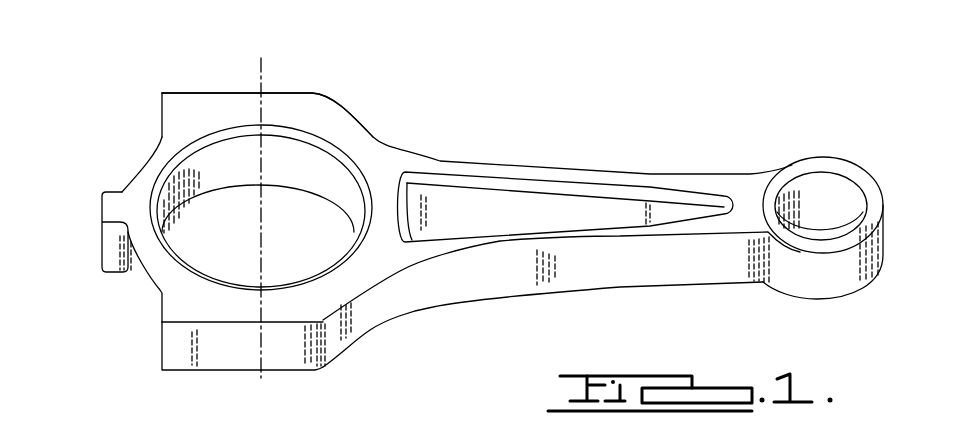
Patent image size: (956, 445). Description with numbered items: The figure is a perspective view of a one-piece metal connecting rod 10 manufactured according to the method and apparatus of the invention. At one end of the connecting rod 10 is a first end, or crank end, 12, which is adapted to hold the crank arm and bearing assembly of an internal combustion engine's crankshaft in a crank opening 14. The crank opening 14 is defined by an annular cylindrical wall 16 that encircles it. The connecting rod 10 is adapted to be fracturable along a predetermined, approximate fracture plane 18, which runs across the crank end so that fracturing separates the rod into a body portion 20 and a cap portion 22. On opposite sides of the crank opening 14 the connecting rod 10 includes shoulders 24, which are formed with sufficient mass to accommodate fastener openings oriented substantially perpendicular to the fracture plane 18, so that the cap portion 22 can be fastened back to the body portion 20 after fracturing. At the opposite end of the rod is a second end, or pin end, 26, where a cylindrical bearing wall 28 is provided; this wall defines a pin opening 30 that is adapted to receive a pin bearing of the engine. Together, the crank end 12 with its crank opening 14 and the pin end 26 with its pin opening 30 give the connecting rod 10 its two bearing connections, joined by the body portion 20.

The connecting rod 10 is at (104, 105).
The first end 12 is at (337, 92).
The crank opening 14 is at (292, 247).
The annular cylindrical wall 16 is at (335, 172).
The fracture plane 18 is at (263, 72).
The body portion 20 is at (444, 285).
The cap portion 22 is at (172, 353).
The shoulders 24 is at (175, 108).
The second end 26 is at (826, 150).
The cylindrical bearing wall 28 is at (823, 190).
The pin opening 30 is at (819, 237).